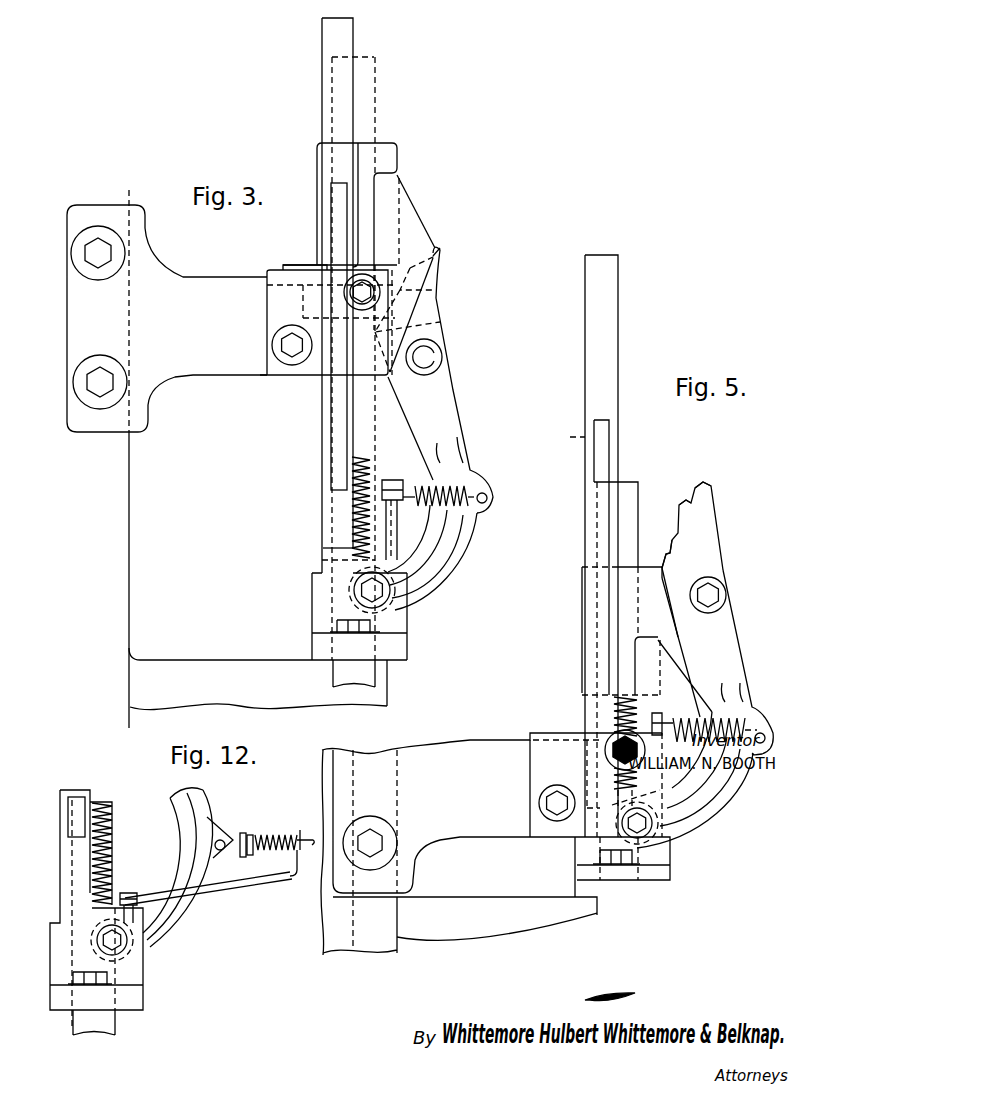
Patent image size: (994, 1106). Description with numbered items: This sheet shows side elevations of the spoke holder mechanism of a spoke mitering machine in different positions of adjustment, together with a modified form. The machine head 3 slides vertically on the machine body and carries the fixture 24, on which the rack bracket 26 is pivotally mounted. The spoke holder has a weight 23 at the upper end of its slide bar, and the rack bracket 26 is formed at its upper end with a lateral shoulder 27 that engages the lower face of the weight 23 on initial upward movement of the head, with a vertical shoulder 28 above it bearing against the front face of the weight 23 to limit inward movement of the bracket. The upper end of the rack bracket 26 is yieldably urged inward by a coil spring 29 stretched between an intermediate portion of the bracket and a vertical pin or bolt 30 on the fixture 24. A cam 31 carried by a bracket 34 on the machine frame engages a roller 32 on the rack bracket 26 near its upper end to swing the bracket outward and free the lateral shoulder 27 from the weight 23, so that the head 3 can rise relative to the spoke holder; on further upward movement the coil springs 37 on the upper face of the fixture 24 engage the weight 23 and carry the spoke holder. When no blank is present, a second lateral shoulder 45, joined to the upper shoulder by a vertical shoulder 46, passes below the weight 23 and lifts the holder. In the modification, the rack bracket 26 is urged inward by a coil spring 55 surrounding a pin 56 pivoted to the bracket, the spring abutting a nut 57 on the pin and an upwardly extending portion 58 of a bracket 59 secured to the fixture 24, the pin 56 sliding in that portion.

In FIG. 3, the head 3 is at (188, 667).
In FIG. 5, the head 3 is at (505, 905).
In FIG. 3, the weight 23 is at (388, 152).
In FIG. 5, the weight 23 is at (648, 566).
In FIG. 12, the fixture 24 is at (137, 962).
In FIG. 3, the rack bracket 26 is at (456, 432).
In FIG. 5, the rack bracket 26 is at (735, 666).
In FIG. 12, the rack bracket 26 is at (190, 805).
In FIG. 3, the lateral shoulder 27 is at (437, 265).
In FIG. 5, the lateral shoulder 27 is at (686, 498).
In FIG. 3, the vertical shoulder 28 is at (433, 248).
In FIG. 5, the vertical shoulder 28 is at (705, 486).
In FIG. 3, the coil spring 29 is at (420, 513).
In FIG. 5, the coil spring 29 is at (697, 743).
In FIG. 3, the vertical pin or bolt 30 is at (397, 543).
In FIG. 5, the vertical pin or bolt 30 is at (700, 827).
In FIG. 3, the cam 31 is at (420, 308).
In FIG. 5, the cam 31 is at (685, 767).
In FIG. 3, the roller 32 is at (432, 347).
In FIG. 5, the roller 32 is at (717, 586).
In FIG. 3, the bracket 34 is at (223, 368).
In FIG. 5, the bracket 34 is at (482, 753).
In FIG. 3, the coil springs 37 is at (375, 480).
In FIG. 5, the coil springs 37 is at (657, 781).
In FIG. 12, the coil springs 37 is at (112, 835).
In FIG. 3, the second lateral shoulder 45 is at (410, 331).
In FIG. 5, the second lateral shoulder 45 is at (668, 556).
In FIG. 3, the vertical shoulder 46 is at (400, 284).
In FIG. 5, the vertical shoulder 46 is at (677, 533).
In FIG. 12, the coil spring 55 is at (260, 836).
In FIG. 12, the pin 56 is at (303, 830).
In FIG. 12, the nut 57 is at (252, 819).
In FIG. 12, the upwardly extending portion 58 is at (305, 858).
In FIG. 12, the bracket 59 is at (232, 890).